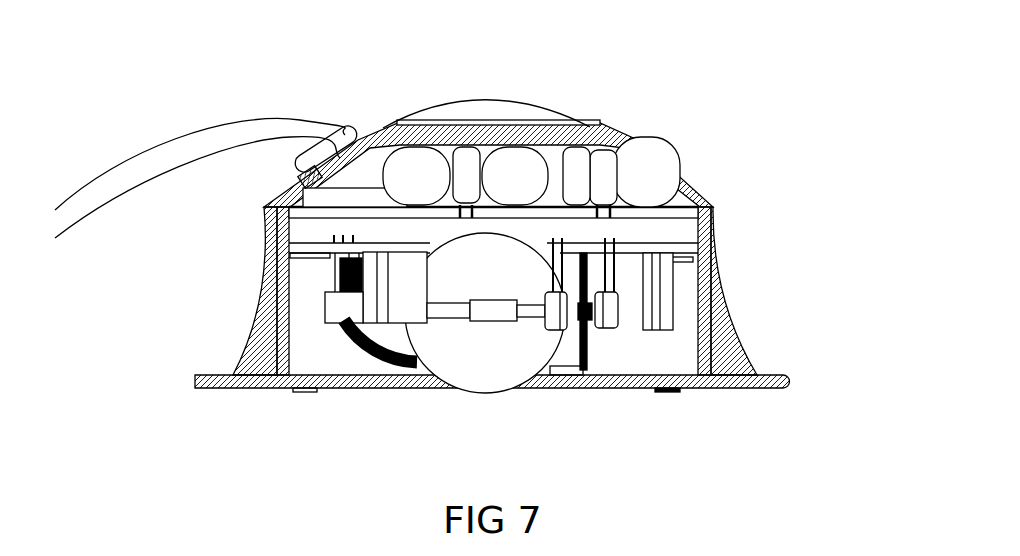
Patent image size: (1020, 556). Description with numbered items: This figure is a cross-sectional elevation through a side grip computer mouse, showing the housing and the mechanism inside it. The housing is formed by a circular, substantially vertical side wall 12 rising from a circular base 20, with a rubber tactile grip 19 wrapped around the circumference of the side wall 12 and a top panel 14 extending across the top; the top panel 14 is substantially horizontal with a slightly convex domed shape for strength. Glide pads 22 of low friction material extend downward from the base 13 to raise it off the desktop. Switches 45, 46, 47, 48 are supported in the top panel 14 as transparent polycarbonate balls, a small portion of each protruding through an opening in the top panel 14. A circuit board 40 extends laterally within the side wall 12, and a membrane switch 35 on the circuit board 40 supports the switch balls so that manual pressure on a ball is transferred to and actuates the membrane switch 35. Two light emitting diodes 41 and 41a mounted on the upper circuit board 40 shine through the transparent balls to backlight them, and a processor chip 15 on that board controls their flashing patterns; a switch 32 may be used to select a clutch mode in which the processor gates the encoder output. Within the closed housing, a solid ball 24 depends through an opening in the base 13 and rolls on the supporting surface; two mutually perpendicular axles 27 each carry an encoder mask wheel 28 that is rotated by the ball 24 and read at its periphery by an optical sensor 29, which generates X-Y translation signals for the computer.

The side wall 12 is at (275, 232).
The base 13 is at (690, 390).
The top panel 14 is at (578, 172).
The processor chip 15 is at (300, 180).
The rubber tactile grip 19 is at (720, 317).
The circular base 20 is at (195, 378).
The glide pads 22 is at (290, 388).
The solid ball 24 is at (483, 395).
The axles 27 is at (500, 318).
The encoder mask wheel 28 is at (375, 365).
The optical sensor 29 is at (553, 326).
The switch 32 is at (275, 273).
The membrane switch 35 is at (700, 181).
The circuit board 40 is at (713, 243).
The light emitting diode 41 is at (417, 160).
The light emitting diode 41a is at (567, 148).
The switch 45 is at (642, 140).
The switch 46 is at (584, 157).
The switch 47 is at (512, 163).
The switch 48 is at (393, 122).